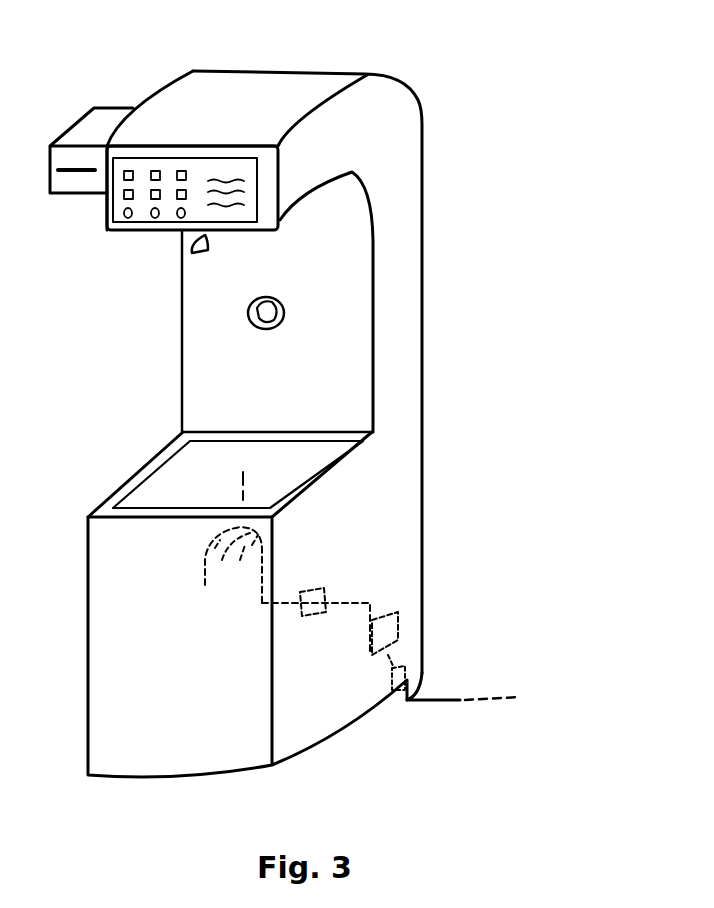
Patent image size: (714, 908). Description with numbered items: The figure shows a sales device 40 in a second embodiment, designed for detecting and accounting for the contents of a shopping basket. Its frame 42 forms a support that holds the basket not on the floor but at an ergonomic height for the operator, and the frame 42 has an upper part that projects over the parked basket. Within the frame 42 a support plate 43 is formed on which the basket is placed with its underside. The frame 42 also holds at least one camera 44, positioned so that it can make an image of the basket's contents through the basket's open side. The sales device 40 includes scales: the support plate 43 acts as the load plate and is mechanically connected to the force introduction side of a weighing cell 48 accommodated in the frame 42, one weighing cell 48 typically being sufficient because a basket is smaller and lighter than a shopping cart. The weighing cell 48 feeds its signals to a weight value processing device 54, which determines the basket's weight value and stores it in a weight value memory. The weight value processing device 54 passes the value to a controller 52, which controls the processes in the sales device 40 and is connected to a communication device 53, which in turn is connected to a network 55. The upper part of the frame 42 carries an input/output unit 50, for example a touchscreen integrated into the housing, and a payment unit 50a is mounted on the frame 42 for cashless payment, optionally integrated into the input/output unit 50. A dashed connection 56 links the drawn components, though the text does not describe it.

The sales device 40 is at (487, 150).
The frame 42 is at (367, 115).
The support plate 43 is at (305, 456).
The camera 44 is at (218, 246).
The weighing cell 48 is at (255, 565).
The input/output unit 50 is at (148, 158).
The payment unit 50a is at (50, 158).
The controller 52 is at (398, 624).
The communication device 53 is at (407, 673).
The weight value processing device 54 is at (312, 617).
The network 55 is at (460, 706).
The connection line 56 is at (370, 603).